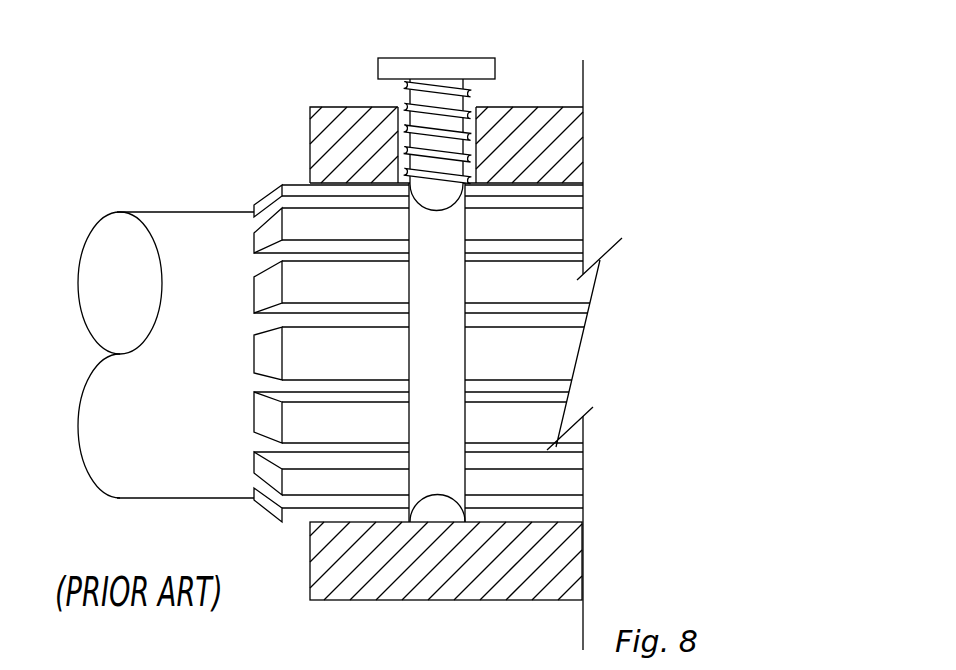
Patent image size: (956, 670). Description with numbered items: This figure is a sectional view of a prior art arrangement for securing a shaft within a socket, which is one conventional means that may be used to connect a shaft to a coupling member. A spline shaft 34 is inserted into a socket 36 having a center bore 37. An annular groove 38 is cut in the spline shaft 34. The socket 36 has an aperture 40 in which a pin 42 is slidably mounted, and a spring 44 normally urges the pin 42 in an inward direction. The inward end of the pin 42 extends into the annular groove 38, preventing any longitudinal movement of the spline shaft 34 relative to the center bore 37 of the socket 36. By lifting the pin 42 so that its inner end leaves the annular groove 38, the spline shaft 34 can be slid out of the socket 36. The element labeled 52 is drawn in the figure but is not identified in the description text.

The spline shaft 34 is at (179, 212).
The socket 36 is at (315, 107).
The center bore 37 is at (443, 522).
The annular groove 38 is at (430, 457).
The aperture 40 is at (497, 78).
The pin 42 is at (478, 58).
The spring 44 is at (425, 107).
The support wall edge 52 is at (540, 669).